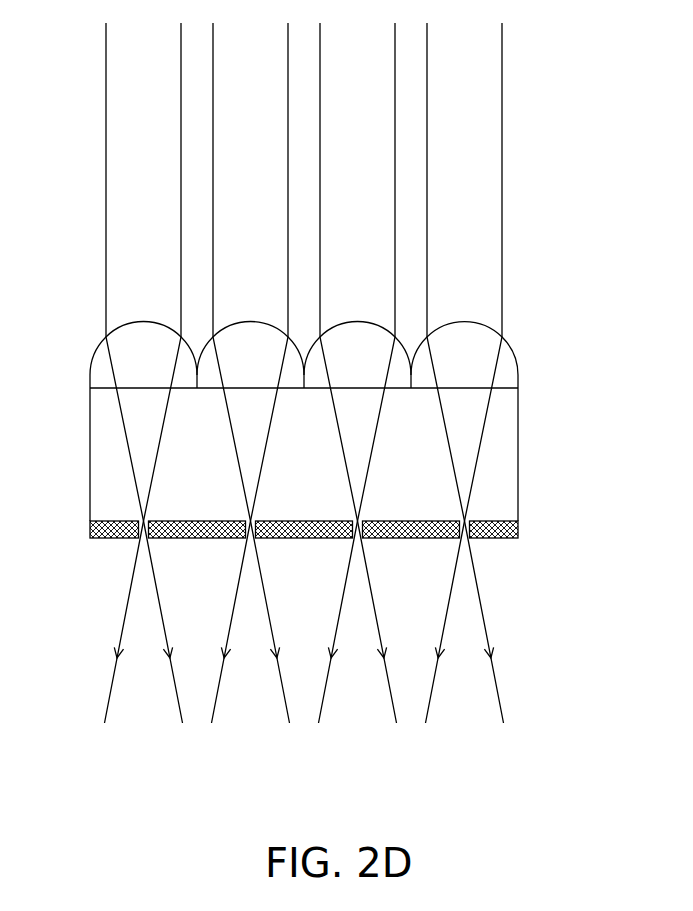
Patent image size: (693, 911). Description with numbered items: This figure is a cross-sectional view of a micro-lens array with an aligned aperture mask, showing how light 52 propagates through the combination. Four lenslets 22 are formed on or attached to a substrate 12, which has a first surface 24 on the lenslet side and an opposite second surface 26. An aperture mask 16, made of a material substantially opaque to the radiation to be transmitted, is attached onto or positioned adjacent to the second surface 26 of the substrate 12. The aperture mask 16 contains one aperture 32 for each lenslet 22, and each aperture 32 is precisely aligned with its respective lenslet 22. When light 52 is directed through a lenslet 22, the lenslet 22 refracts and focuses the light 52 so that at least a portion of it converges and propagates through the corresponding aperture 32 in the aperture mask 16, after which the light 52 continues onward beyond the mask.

The light 52 is at (395, 98).
The lenslets 22 is at (509, 340).
The first surface 24 is at (518, 388).
The substrate 12 is at (518, 450).
The aperture mask 16 is at (518, 527).
The second surface 26 is at (141, 538).
The aperture 32 is at (241, 542).